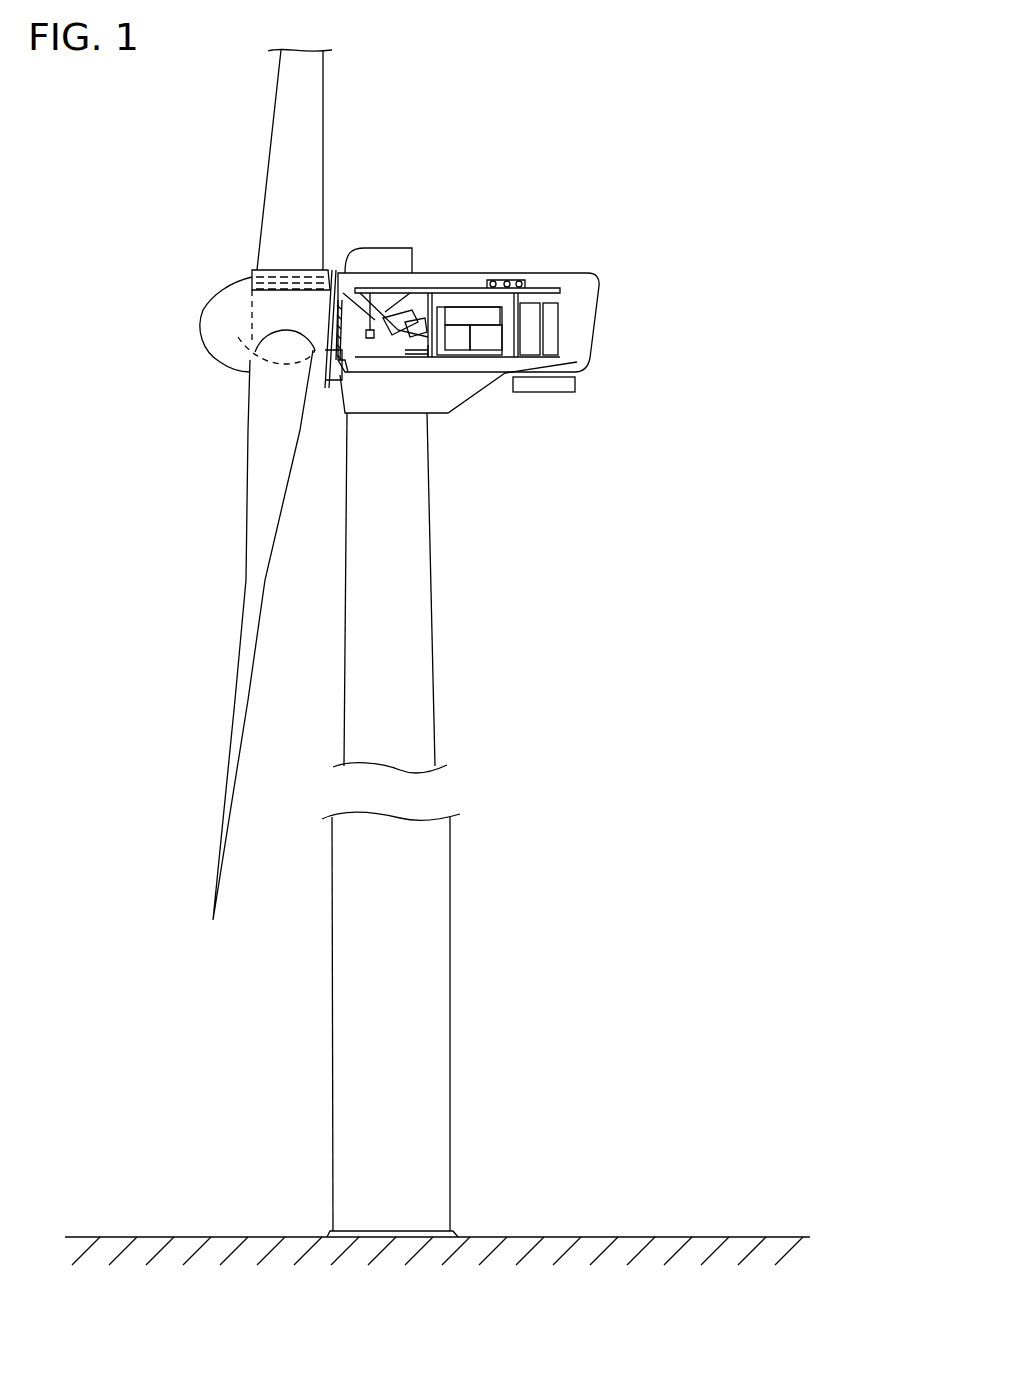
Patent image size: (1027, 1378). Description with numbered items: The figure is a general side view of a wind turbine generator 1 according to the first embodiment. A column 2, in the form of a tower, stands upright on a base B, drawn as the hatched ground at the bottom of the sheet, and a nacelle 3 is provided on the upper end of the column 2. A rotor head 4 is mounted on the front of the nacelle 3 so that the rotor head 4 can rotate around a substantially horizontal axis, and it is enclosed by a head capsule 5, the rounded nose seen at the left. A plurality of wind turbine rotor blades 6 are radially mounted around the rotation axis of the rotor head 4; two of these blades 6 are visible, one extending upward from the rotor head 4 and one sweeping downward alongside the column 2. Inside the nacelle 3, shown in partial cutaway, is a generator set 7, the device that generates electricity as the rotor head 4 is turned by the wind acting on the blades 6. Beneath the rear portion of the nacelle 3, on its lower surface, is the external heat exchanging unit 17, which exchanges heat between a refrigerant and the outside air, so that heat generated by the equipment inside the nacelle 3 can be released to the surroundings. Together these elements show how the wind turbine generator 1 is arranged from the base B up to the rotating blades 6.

The wind turbine generator 1 is at (598, 143).
The column 2 is at (447, 951).
The nacelle 3 is at (463, 273).
The rotor head 4 is at (226, 350).
The head capsule 5 is at (223, 292).
The wind turbine rotor blades 6 is at (277, 120).
The generator set 7 is at (563, 332).
The external heat exchanging unit 17 is at (549, 393).
The base B is at (326, 1236).